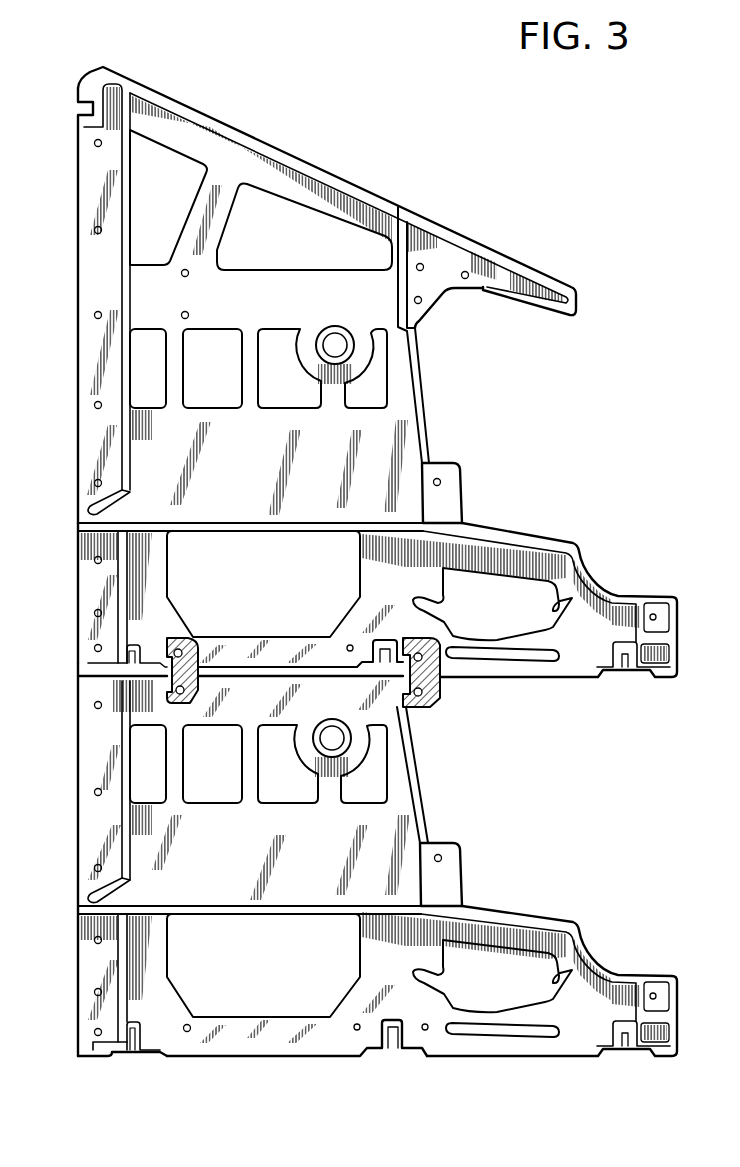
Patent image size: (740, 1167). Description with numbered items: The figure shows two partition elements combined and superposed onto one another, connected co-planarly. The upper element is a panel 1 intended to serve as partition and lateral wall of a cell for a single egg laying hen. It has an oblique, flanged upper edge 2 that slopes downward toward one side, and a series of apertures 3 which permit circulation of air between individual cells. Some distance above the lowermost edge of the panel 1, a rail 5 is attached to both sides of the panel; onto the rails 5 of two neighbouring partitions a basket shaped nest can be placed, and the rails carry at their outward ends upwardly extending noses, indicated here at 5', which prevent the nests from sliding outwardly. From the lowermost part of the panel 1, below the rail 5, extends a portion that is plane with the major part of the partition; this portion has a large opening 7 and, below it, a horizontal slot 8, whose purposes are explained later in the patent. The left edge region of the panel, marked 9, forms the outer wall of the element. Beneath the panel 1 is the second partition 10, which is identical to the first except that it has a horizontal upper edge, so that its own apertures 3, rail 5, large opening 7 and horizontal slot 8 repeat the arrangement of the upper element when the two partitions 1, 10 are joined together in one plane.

The panel 1 is at (462, 430).
The oblique flanged upper edge 2 is at (239, 104).
The apertures 3 is at (278, 340).
The rail 5 is at (250, 696).
The foot / support lug 5' is at (425, 684).
The large opening 7 is at (502, 580).
The horizontal slot 8 is at (520, 656).
The left outer wall 9 is at (78, 342).
The partition 10 is at (468, 794).